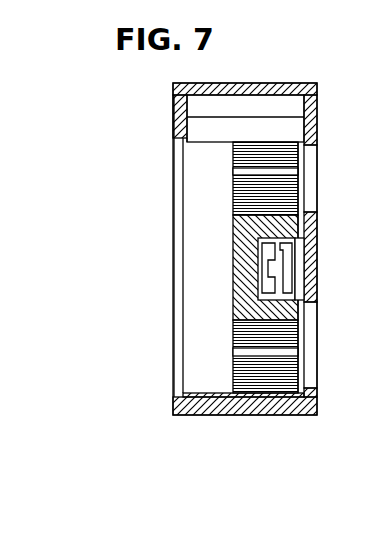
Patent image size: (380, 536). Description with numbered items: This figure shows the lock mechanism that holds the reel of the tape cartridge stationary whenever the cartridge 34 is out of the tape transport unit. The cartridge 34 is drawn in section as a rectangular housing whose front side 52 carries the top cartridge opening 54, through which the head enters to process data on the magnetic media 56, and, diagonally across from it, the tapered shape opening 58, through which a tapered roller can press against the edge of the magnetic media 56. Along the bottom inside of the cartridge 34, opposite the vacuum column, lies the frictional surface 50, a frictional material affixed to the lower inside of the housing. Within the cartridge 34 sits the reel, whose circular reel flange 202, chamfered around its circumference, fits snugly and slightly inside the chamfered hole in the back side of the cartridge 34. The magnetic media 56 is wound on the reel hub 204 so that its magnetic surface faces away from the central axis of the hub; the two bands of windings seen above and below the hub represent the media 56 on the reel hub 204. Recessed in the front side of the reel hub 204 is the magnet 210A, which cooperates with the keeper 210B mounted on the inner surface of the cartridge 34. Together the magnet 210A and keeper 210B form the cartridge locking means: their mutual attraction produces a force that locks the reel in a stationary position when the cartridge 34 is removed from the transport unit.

The cartridge 34 is at (301, 91).
The frictional surface 50 is at (214, 390).
The front side 52 is at (311, 120).
The top cartridge opening 54 is at (312, 157).
The magnetic media 56 is at (290, 198).
The tapered shape opening 58 is at (310, 318).
The reel flange 202 is at (179, 194).
The reel hub 204 is at (247, 305).
The magnet 210A is at (265, 256).
The keeper 210B is at (288, 253).